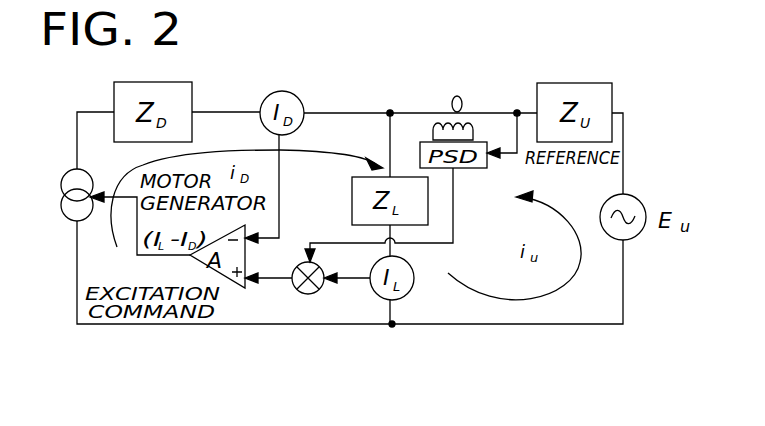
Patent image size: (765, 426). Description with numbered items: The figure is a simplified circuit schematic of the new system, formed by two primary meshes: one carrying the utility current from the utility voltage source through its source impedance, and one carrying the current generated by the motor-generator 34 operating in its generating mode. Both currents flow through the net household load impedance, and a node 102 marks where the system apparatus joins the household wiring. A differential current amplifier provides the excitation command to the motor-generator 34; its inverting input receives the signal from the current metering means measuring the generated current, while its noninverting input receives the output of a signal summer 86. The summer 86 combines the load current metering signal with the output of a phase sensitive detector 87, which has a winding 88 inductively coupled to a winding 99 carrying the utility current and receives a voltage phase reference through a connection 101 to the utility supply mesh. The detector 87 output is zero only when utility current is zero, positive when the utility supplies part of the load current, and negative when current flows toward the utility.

The motor-generator 34 is at (63, 192).
The node 102 is at (390, 111).
The winding 99 is at (457, 96).
The winding 88 is at (472, 127).
The connection 101 is at (514, 158).
The phase sensitive detector 87 is at (473, 170).
The signal summer 86 is at (318, 290).